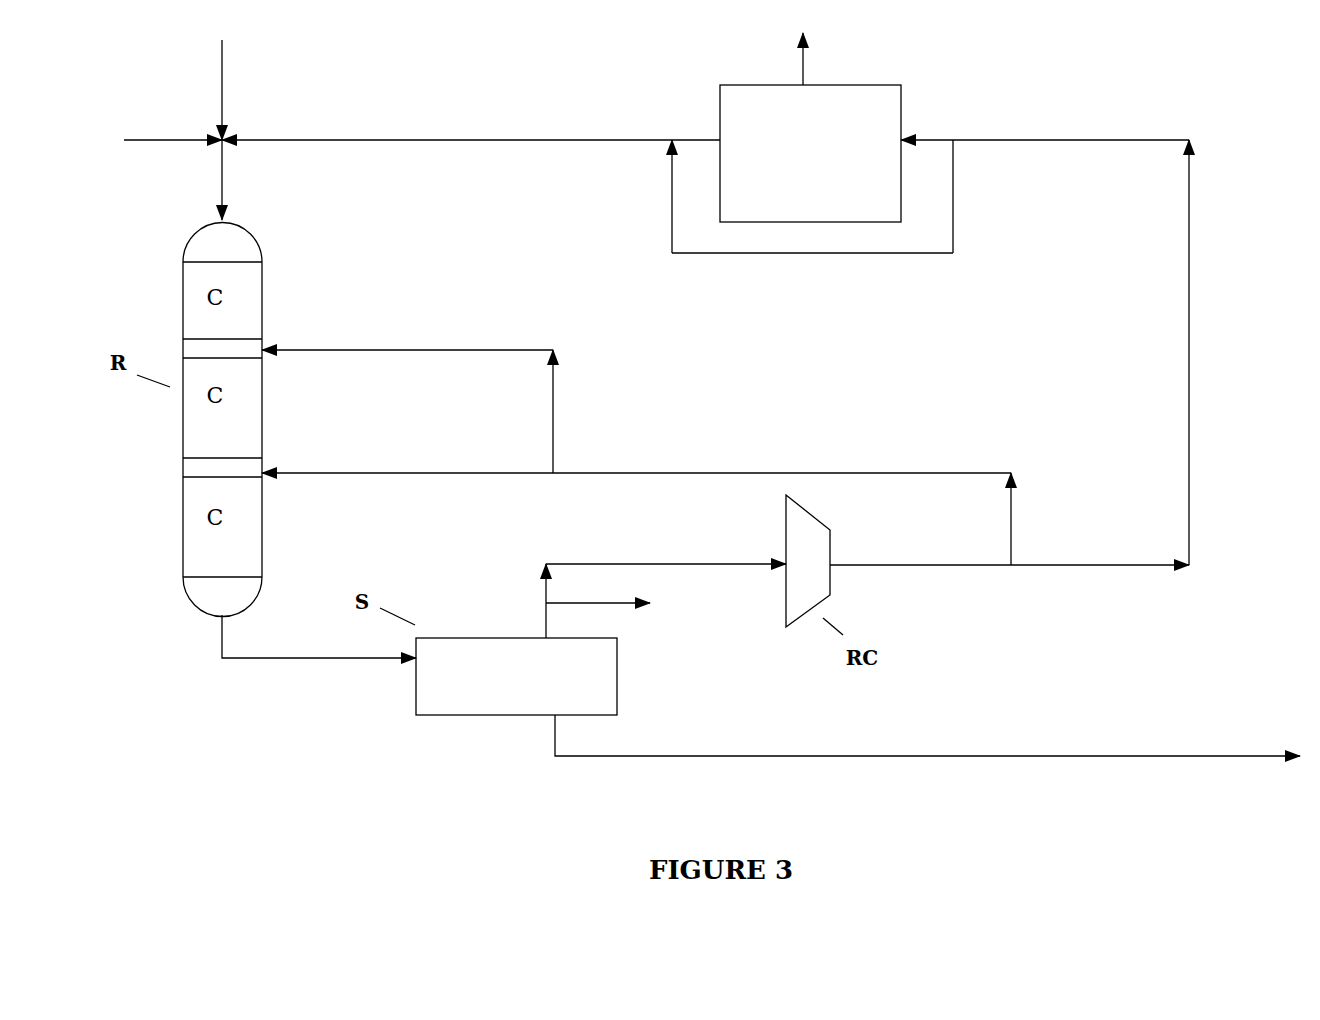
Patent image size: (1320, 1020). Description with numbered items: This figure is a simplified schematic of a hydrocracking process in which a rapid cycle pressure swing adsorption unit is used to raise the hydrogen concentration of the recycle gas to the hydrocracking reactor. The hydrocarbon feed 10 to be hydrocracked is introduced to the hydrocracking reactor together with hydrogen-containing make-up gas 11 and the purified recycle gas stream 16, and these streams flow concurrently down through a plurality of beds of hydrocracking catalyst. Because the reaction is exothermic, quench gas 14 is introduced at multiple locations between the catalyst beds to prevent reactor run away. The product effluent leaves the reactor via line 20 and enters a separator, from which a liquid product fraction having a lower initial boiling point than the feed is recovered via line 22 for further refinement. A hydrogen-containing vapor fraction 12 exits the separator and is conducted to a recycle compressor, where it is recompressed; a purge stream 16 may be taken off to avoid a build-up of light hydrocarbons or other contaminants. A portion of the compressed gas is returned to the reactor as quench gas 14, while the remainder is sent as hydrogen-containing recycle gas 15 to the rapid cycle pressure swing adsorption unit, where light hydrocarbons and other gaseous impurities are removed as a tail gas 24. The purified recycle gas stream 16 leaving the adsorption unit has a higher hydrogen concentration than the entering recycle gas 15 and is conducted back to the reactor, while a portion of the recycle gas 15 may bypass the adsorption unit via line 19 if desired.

The hydrocarbon feed 10 is at (172, 124).
The hydrogen-containing make-up gas 11 is at (228, 88).
The hydrogen-containing vapor fraction 12 is at (530, 623).
The quench gas 14 is at (366, 332).
The hydrogen-containing recycle gas 15 is at (1165, 312).
The purified recycle gas stream 16 is at (355, 163).
The bypass line 19 is at (822, 275).
The product effluent line 20 is at (310, 672).
The liquid product line 22 is at (675, 770).
The tail gas 24 is at (818, 57).